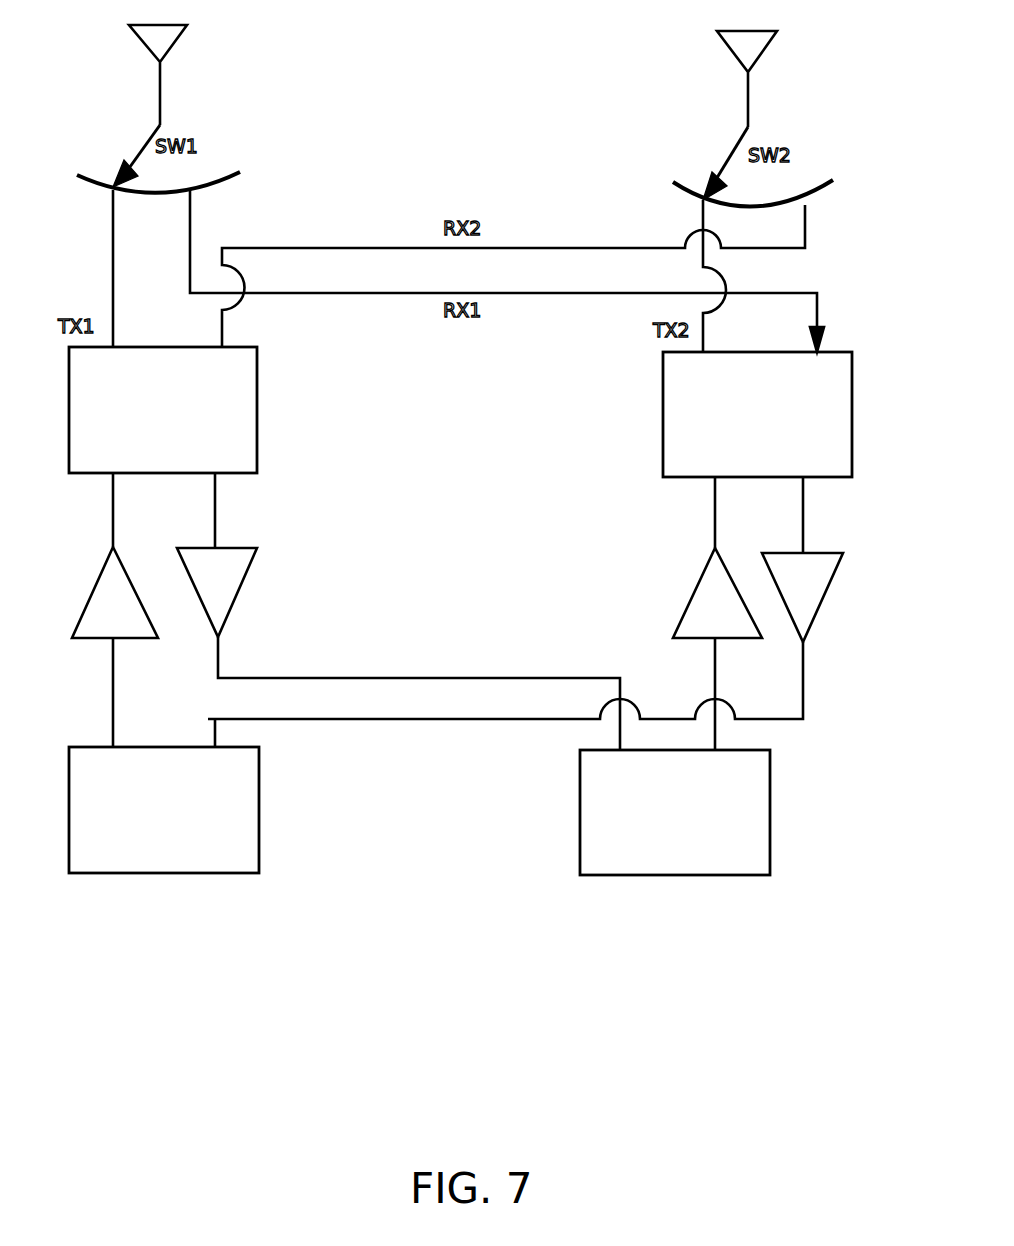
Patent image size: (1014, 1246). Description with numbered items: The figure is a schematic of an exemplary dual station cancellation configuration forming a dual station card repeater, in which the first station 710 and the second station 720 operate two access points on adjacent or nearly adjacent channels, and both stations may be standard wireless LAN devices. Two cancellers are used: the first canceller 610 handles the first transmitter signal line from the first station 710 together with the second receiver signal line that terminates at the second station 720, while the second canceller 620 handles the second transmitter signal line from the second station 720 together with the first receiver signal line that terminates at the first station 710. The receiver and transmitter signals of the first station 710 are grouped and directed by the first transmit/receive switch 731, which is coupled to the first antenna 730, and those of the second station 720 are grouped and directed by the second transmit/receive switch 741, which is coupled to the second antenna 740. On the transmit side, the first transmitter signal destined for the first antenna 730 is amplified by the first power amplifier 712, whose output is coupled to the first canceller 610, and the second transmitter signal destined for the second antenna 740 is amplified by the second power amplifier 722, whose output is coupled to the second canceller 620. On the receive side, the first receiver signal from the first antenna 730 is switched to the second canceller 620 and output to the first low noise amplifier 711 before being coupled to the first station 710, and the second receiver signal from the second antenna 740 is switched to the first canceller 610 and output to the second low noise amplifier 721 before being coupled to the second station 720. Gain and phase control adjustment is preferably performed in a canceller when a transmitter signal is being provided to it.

The antenna 1 730 is at (157, 78).
The T/R switch SW1 731 is at (237, 181).
The antenna 2 740 is at (745, 88).
The T/R switch SW2 741 is at (833, 186).
The canceller 1 610 is at (257, 456).
The canceller 2 620 is at (852, 456).
The PA1 712 is at (90, 592).
The LNA2 721 is at (236, 595).
The PA2 722 is at (696, 585).
The LNA1 711 is at (824, 604).
The station 1 710 is at (152, 877).
The station 2 720 is at (580, 811).